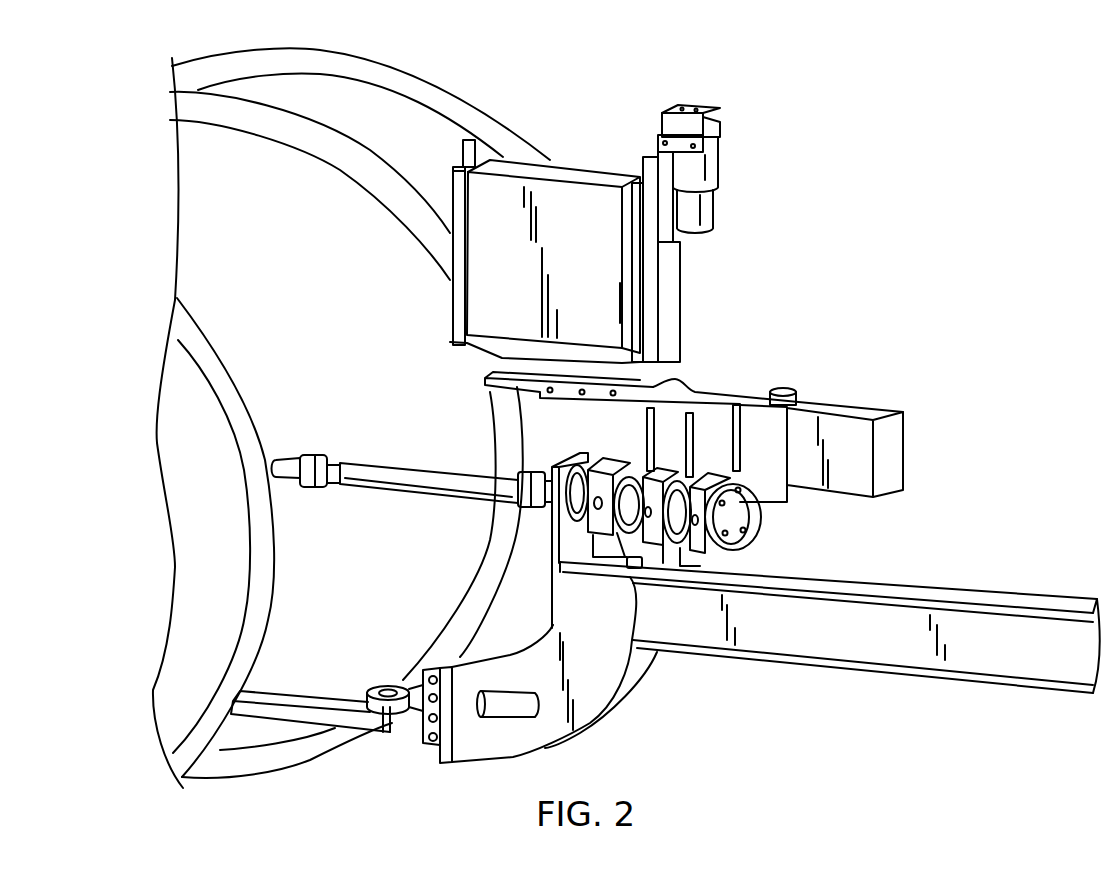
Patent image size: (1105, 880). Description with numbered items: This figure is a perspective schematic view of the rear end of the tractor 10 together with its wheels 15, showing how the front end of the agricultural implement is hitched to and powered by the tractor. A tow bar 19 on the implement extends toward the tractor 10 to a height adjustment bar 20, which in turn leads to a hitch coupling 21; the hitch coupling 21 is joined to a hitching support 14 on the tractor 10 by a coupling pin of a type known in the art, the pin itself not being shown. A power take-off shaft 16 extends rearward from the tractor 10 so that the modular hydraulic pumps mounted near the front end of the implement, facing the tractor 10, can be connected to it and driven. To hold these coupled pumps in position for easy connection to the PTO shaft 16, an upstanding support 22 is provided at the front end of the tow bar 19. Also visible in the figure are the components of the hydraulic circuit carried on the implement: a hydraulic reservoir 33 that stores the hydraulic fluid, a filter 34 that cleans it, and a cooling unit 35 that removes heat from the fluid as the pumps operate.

The tractor 10 is at (482, 62).
The hitching support 14 is at (290, 713).
The wheels 15 is at (495, 110).
The power take-off (PTO) shaft 16 is at (420, 481).
The tow bar 19 is at (790, 662).
The height adjustment bar 20 is at (598, 727).
The hitch coupling 21 is at (387, 707).
The upstanding support 22 is at (573, 577).
The hydraulic reservoir 33 is at (837, 403).
The filter 34 is at (713, 177).
The cooling unit 35 is at (567, 163).